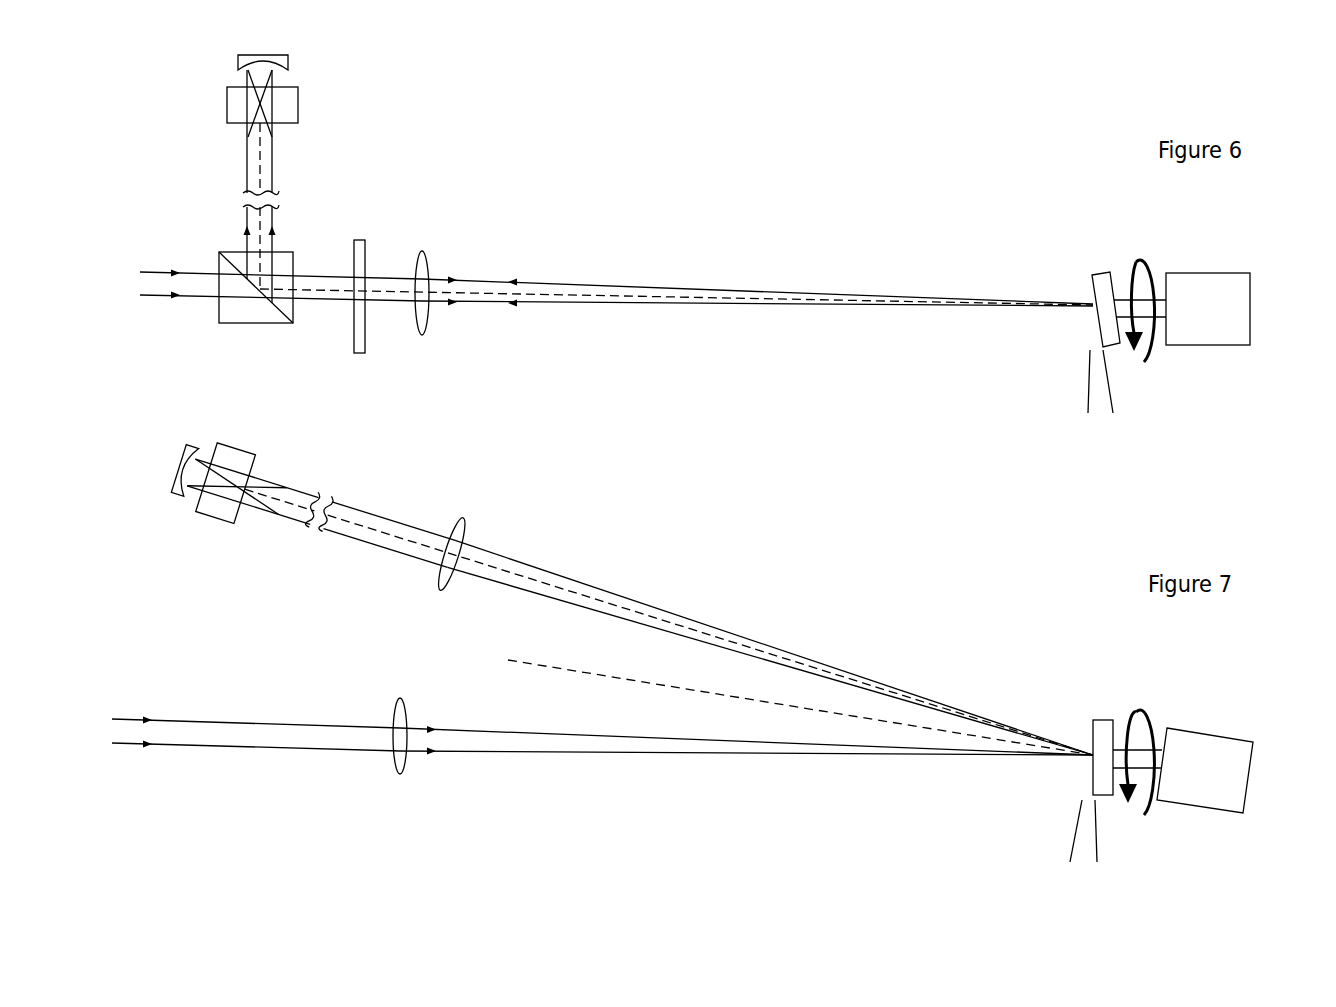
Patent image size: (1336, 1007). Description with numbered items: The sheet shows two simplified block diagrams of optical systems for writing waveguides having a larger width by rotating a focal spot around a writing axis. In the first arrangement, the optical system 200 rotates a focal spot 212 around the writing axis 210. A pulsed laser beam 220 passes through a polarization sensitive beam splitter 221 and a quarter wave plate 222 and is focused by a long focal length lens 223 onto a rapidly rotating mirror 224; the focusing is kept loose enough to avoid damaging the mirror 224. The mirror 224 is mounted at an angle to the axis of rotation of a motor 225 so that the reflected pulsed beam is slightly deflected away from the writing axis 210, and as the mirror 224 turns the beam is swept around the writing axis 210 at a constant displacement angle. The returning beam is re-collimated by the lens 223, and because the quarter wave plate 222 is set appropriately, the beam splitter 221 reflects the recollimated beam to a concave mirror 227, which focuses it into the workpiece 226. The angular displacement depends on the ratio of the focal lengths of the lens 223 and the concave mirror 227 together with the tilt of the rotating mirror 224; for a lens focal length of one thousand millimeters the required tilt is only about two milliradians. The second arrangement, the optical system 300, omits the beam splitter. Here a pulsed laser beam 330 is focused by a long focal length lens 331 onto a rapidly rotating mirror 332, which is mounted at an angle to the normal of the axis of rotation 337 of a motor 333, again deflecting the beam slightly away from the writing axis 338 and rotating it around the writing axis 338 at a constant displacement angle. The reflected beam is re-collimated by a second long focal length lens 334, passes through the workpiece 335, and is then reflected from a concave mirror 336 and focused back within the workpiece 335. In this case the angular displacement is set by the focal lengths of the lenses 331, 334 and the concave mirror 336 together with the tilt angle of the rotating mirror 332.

In FIG. 6, the optical system 200 is at (695, 235).
In FIG. 6, the writing axis 210 is at (264, 189).
In FIG. 6, the focal spot 212 is at (266, 110).
In FIG. 6, the pulsed laser beam 220 is at (181, 296).
In FIG. 6, the polarization sensitive beam splitter 221 is at (273, 318).
In FIG. 6, the quarter wave plate 222 is at (360, 334).
In FIG. 6, the long focal length lens 223 is at (425, 322).
In FIG. 6, the rotating mirror 224 is at (1100, 280).
In FIG. 6, the motor 225 is at (1213, 285).
In FIG. 6, the workpiece 226 is at (287, 118).
In FIG. 6, the concave mirror 227 is at (296, 63).
In FIG. 7, the optical system 300 is at (682, 652).
In FIG. 7, the pulsed laser beam 330 is at (193, 735).
In FIG. 7, the long focal length lens 331 is at (400, 770).
In FIG. 7, the rotating mirror 332 is at (1102, 735).
In FIG. 7, the motor 333 is at (1208, 745).
In FIG. 7, the second long focal length lens 334 is at (442, 582).
In FIG. 7, the workpiece 335 is at (225, 512).
In FIG. 7, the concave mirror 336 is at (172, 493).
In FIG. 7, the axis of rotation 337 is at (607, 675).
In FIG. 7, the writing axis 338 is at (347, 520).